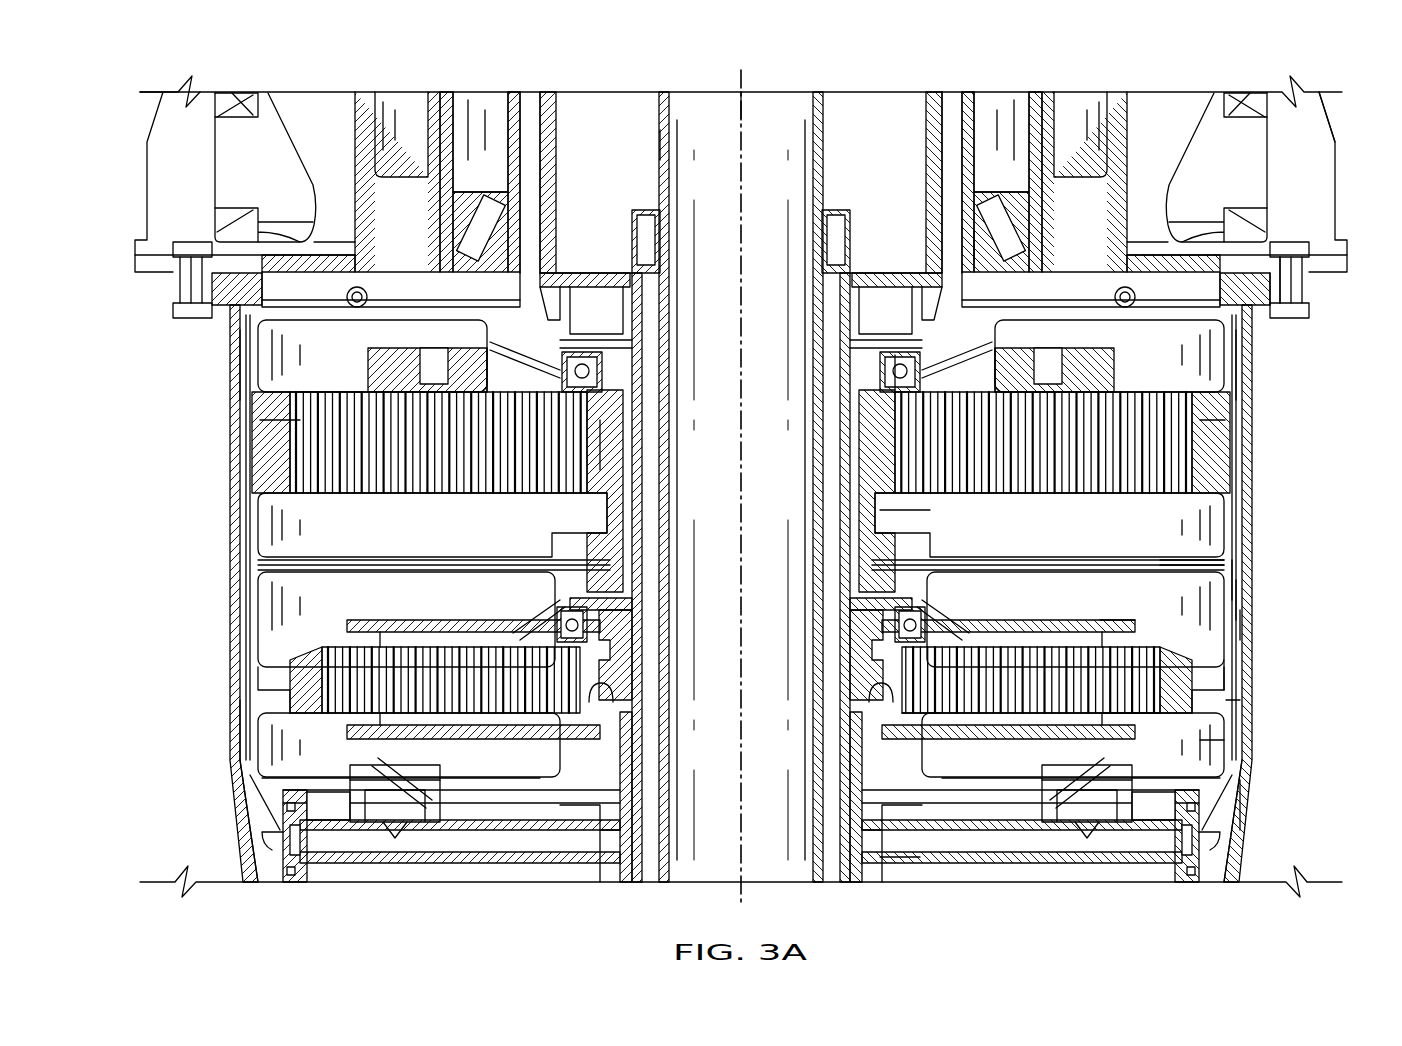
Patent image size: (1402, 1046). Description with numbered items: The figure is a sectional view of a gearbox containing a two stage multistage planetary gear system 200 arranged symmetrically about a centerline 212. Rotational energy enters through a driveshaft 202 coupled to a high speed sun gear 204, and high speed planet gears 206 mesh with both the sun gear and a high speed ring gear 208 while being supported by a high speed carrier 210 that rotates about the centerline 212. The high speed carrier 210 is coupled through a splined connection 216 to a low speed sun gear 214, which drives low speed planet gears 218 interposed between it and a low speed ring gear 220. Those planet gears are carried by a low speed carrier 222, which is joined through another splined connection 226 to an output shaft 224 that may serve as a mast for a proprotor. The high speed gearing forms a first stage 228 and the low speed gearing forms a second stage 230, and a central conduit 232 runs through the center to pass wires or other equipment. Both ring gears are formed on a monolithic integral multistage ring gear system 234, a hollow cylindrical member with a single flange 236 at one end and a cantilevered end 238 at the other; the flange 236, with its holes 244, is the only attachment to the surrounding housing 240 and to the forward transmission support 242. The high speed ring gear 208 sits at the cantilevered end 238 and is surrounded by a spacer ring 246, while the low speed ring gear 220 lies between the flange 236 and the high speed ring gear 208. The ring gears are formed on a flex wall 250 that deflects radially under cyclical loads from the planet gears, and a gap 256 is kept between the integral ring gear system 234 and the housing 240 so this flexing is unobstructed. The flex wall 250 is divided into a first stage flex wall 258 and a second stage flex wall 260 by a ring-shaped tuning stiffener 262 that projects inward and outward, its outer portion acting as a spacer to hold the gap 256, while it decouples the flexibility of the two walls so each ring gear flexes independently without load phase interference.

The multistage planetary gear system 200 is at (128, 92).
The driveshaft 202 is at (875, 848).
The high speed sun gear 204 is at (920, 718).
The high speed planet gears 206 is at (1140, 718).
The high speed ring gear 208 is at (1242, 742).
The high speed carrier 210 is at (1128, 608).
The centerline 212 is at (744, 82).
The low speed sun gear 214 is at (615, 445).
The splined connection 216 is at (915, 520).
The low speed planet gears 218 is at (300, 420).
The low speed ring gear 220 is at (1225, 455).
The low speed carrier 222 is at (365, 352).
The output shaft 224 is at (945, 172).
The splined connection 226 is at (1000, 338).
The first stage 228 is at (228, 725).
The second stage 230 is at (246, 366).
The central conduit 232 is at (658, 145).
The integral multistage ring gear system 234 is at (1240, 512).
The flange 236 is at (1318, 282).
The cantilevered end 238 is at (1240, 677).
The housing 240 is at (1244, 792).
The forward transmission support 242 is at (1320, 118).
The holes 244 is at (1290, 248).
The spacer ring 246 is at (1240, 702).
The flex wall 250 is at (1240, 605).
The gap 256 is at (1236, 578).
The first stage flex wall 258 is at (1242, 632).
The second stage flex wall 260 is at (1246, 350).
The tuning stiffener 262 is at (1236, 548).